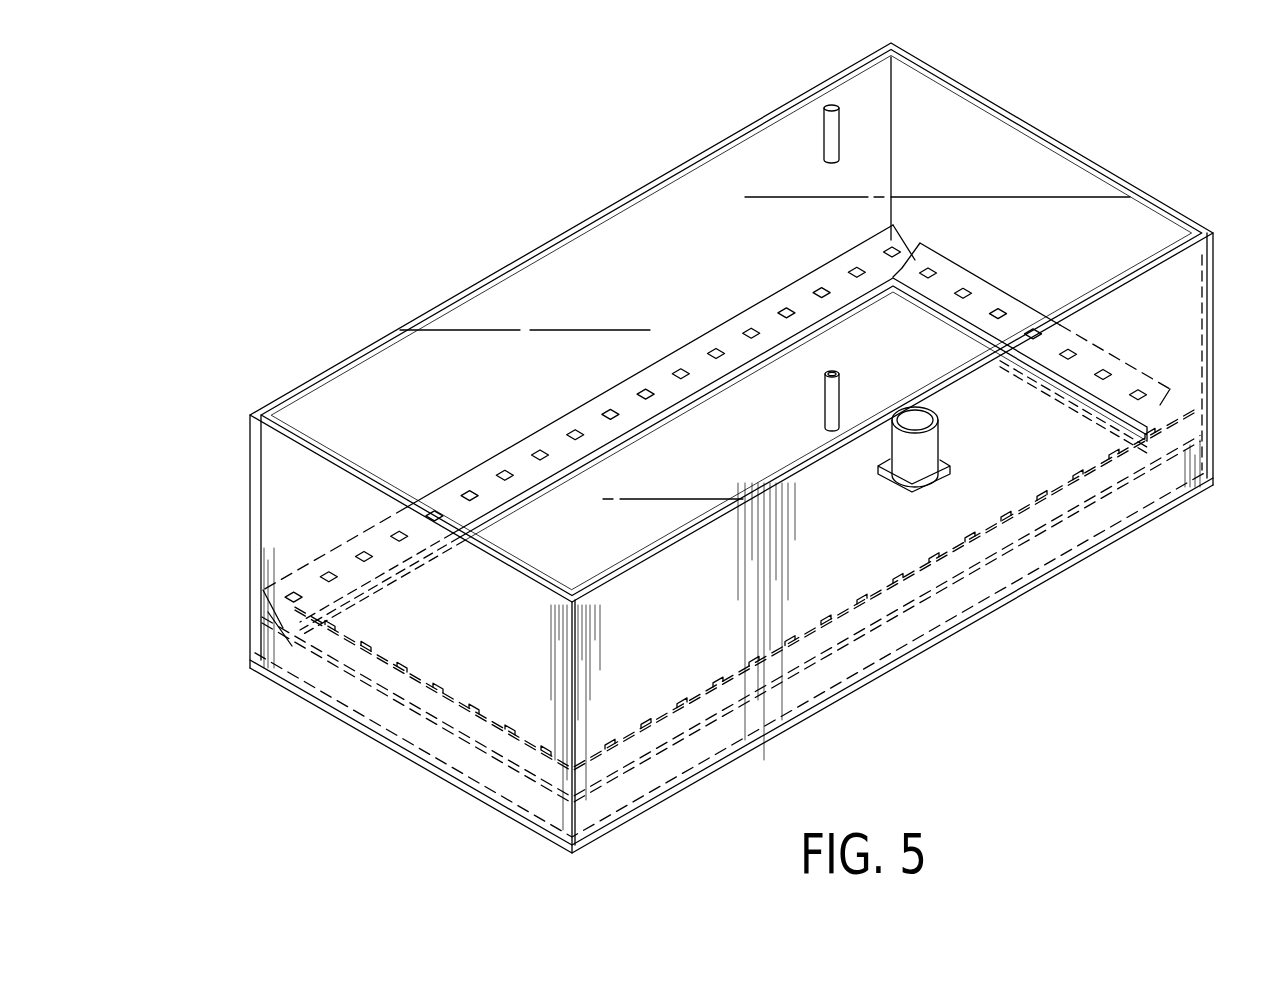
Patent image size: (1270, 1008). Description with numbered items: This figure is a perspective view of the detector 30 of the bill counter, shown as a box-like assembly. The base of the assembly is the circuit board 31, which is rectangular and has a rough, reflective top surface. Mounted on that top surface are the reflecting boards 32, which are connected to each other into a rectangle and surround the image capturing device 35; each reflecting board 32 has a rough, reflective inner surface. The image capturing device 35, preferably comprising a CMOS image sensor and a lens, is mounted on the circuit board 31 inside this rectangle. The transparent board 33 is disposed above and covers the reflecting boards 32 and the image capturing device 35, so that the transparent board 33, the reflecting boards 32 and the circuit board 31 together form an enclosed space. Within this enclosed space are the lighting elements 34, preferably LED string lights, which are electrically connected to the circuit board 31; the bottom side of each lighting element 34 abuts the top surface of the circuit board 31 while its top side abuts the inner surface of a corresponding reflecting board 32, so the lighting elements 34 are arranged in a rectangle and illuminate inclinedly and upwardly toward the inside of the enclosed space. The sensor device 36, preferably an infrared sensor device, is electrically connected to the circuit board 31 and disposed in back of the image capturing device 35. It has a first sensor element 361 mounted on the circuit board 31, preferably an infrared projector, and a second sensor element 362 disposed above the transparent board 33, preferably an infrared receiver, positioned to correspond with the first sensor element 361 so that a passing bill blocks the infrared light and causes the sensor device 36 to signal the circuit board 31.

The detector 30 is at (720, 120).
The circuit board 31 is at (837, 343).
The reflecting board 32 is at (249, 570).
The transparent board 33 is at (1022, 121).
The lighting element 34 is at (1025, 312).
The image capturing device 35 is at (935, 445).
The sensor device 36 is at (824, 102).
The first sensor element 361 is at (840, 373).
The second sensor element 362 is at (838, 130).